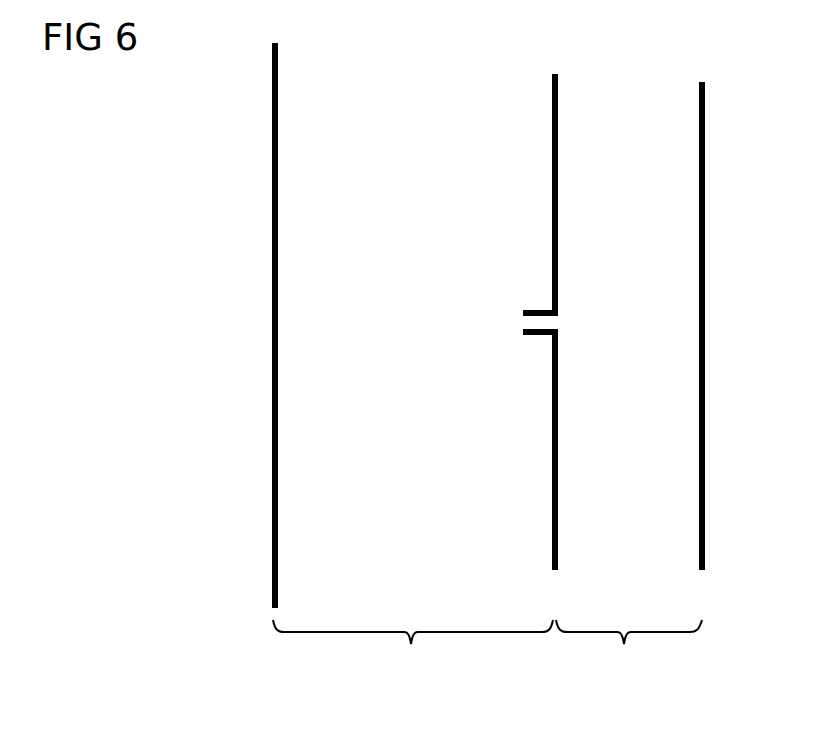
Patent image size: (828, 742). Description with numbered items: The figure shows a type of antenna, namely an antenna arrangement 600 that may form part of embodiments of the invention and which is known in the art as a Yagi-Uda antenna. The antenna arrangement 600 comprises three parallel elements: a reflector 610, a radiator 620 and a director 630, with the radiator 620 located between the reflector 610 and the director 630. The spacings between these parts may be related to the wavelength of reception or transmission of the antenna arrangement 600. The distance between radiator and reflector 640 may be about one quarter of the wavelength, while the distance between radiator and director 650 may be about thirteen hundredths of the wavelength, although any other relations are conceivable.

The antenna arrangement 600 is at (176, 379).
The reflector 610 is at (272, 220).
The radiator 620 is at (552, 220).
The director 630 is at (699, 220).
The distance between radiator and reflector 640 is at (413, 651).
The distance between radiator and director 650 is at (629, 651).